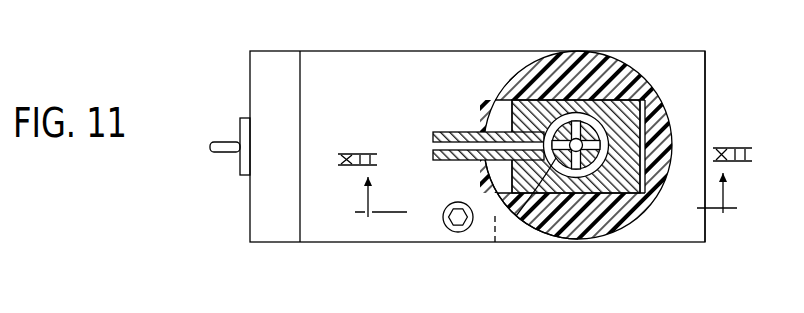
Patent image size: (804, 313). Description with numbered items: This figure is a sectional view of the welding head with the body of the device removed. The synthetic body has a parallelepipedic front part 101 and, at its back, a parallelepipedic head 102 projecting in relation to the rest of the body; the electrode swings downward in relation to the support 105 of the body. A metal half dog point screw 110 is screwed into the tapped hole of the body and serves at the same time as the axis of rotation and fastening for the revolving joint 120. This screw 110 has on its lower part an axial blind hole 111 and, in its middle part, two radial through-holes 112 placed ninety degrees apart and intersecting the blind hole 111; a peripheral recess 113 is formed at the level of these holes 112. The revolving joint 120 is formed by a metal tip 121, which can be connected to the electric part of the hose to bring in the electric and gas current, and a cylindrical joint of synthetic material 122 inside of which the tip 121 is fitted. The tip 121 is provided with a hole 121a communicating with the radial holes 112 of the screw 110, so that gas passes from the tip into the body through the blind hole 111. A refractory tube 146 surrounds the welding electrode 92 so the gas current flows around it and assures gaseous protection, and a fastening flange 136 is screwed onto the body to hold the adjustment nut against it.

The welding electrode 92 is at (213, 148).
The front part 101 is at (415, 218).
The parallelepipedic head 102 is at (520, 60).
The support 105 is at (272, 203).
The half dog point screw 110 is at (520, 226).
The axial blind hole 111 is at (604, 188).
The radial through-holes 112 is at (580, 130).
The peripheral recess 113 is at (603, 136).
The revolving joint 120 is at (538, 240).
The metal tip 121 is at (487, 130).
The hole 121a is at (440, 146).
The cylindrical joint of synthetic material 122 is at (657, 167).
The fastening flange 136 is at (692, 135).
The tube 146 is at (240, 126).